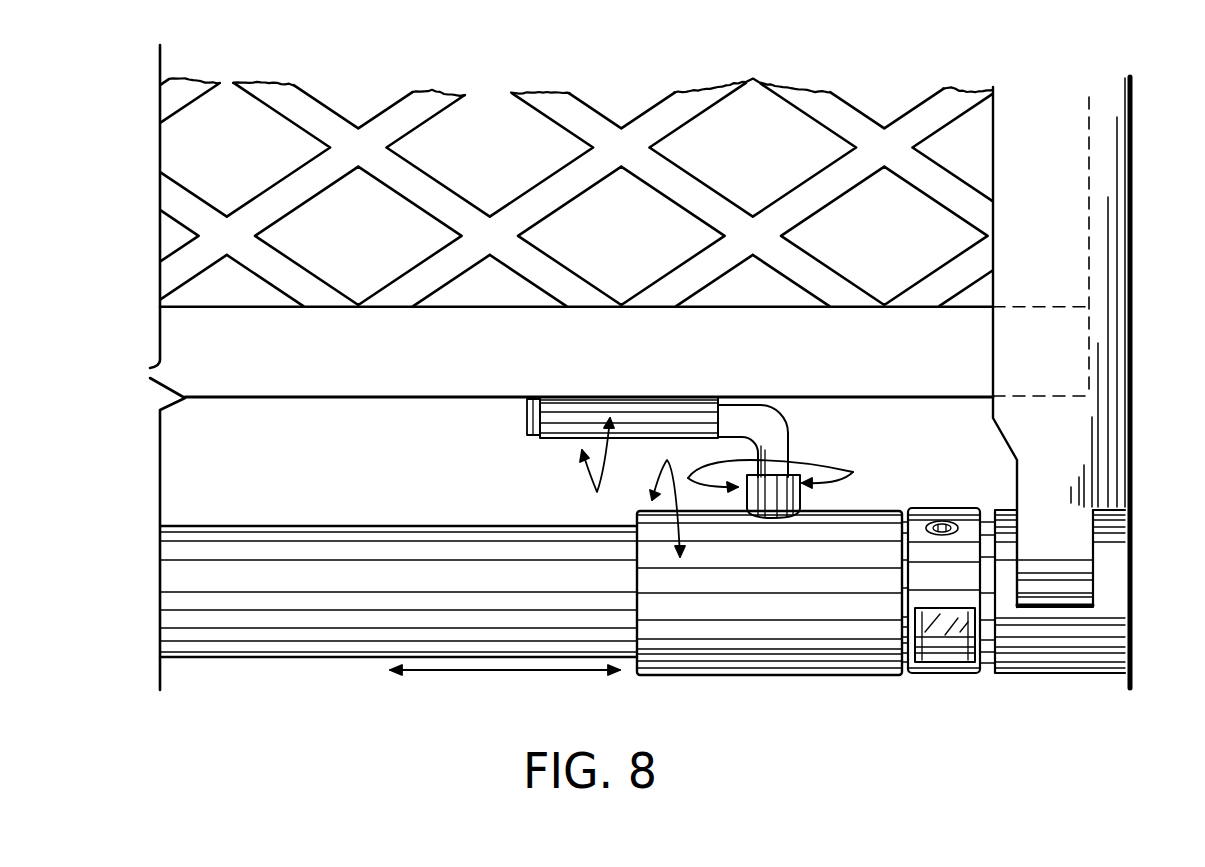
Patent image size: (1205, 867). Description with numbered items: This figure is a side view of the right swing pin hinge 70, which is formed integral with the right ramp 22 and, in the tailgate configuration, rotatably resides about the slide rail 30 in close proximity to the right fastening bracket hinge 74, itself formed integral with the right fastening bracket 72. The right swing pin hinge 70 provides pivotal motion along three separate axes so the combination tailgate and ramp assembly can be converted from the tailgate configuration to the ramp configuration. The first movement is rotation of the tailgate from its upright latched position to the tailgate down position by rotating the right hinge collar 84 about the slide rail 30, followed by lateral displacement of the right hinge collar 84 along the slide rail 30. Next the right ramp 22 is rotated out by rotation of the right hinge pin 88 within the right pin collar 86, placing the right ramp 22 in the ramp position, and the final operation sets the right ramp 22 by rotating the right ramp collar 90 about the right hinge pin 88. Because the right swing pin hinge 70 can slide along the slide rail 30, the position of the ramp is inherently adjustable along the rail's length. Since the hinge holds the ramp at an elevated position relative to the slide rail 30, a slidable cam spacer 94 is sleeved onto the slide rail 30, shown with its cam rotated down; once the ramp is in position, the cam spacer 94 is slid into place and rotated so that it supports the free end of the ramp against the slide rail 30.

The right ramp 22 is at (317, 385).
The slide rail 30 is at (355, 647).
The right swing pin hinge 70 is at (769, 594).
The right fastening bracket 72 is at (1110, 212).
The right fastening bracket hinge 74 is at (1107, 607).
The right hinge collar 84 is at (755, 653).
The right pin collar 86 is at (780, 493).
The right hinge pin 88 is at (773, 432).
The right ramp collar 90 is at (635, 422).
The slidable cam spacer 94 is at (942, 512).